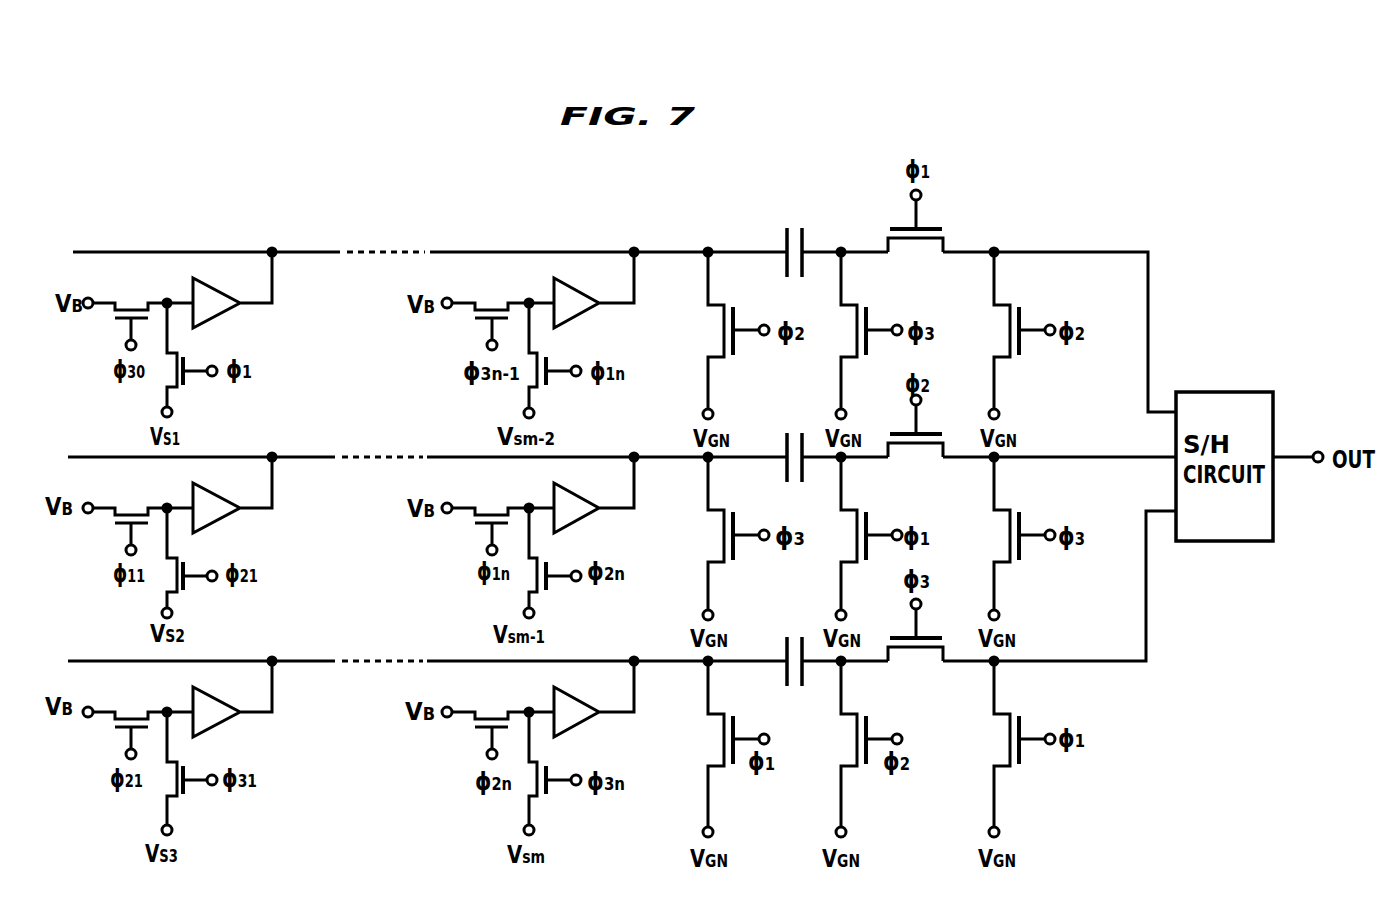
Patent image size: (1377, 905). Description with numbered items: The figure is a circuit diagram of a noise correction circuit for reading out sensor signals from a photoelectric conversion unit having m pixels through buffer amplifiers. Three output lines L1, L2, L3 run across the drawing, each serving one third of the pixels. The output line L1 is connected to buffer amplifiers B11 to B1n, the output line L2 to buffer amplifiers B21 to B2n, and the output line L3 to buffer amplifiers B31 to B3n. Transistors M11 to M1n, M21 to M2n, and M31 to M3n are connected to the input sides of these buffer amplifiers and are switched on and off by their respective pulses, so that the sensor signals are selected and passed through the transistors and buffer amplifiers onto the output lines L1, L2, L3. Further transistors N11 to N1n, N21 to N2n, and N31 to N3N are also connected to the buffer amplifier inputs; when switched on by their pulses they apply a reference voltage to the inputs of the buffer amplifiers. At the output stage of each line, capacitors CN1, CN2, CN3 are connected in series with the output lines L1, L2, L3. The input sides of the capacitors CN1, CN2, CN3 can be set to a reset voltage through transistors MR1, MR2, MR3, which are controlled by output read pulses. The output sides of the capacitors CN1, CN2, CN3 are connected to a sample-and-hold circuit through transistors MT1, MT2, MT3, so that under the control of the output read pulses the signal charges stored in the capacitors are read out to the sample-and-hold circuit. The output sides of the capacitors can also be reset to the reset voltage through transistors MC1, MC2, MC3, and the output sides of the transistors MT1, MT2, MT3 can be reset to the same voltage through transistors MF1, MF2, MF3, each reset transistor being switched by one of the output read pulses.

The output line L1 is at (497, 251).
The output line L2 is at (455, 456).
The output line L3 is at (458, 660).
The transistor N11 is at (125, 309).
The transistor N1n is at (485, 310).
The transistor N21 is at (125, 515).
The transistor N2n is at (485, 515).
The transistor N31 is at (125, 716).
The transistor N3N is at (485, 717).
The buffer amplifier B11 is at (210, 297).
The buffer amplifier B1n is at (569, 297).
The buffer amplifier B21 is at (210, 502).
The buffer amplifier B2n is at (571, 502).
The buffer amplifier B31 is at (210, 702).
The buffer amplifier B3n is at (571, 704).
The transistor M11 is at (191, 360).
The transistor M1n is at (557, 360).
The transistor M21 is at (192, 564).
The transistor M2n is at (557, 564).
The transistor M31 is at (191, 773).
The transistor M3n is at (557, 773).
The capacitor CN1 is at (801, 234).
The capacitor CN2 is at (801, 440).
The capacitor CN3 is at (796, 641).
The transistor MR1 is at (721, 333).
The transistor MR2 is at (719, 536).
The transistor MR3 is at (718, 747).
The transistor MC1 is at (869, 333).
The transistor MC2 is at (856, 536).
The transistor MC3 is at (851, 747).
The transistor MT1 is at (915, 234).
The transistor MT2 is at (915, 442).
The transistor MT3 is at (915, 646).
The transistor MF1 is at (1008, 333).
The transistor MF2 is at (1005, 536).
The transistor MF3 is at (1005, 747).